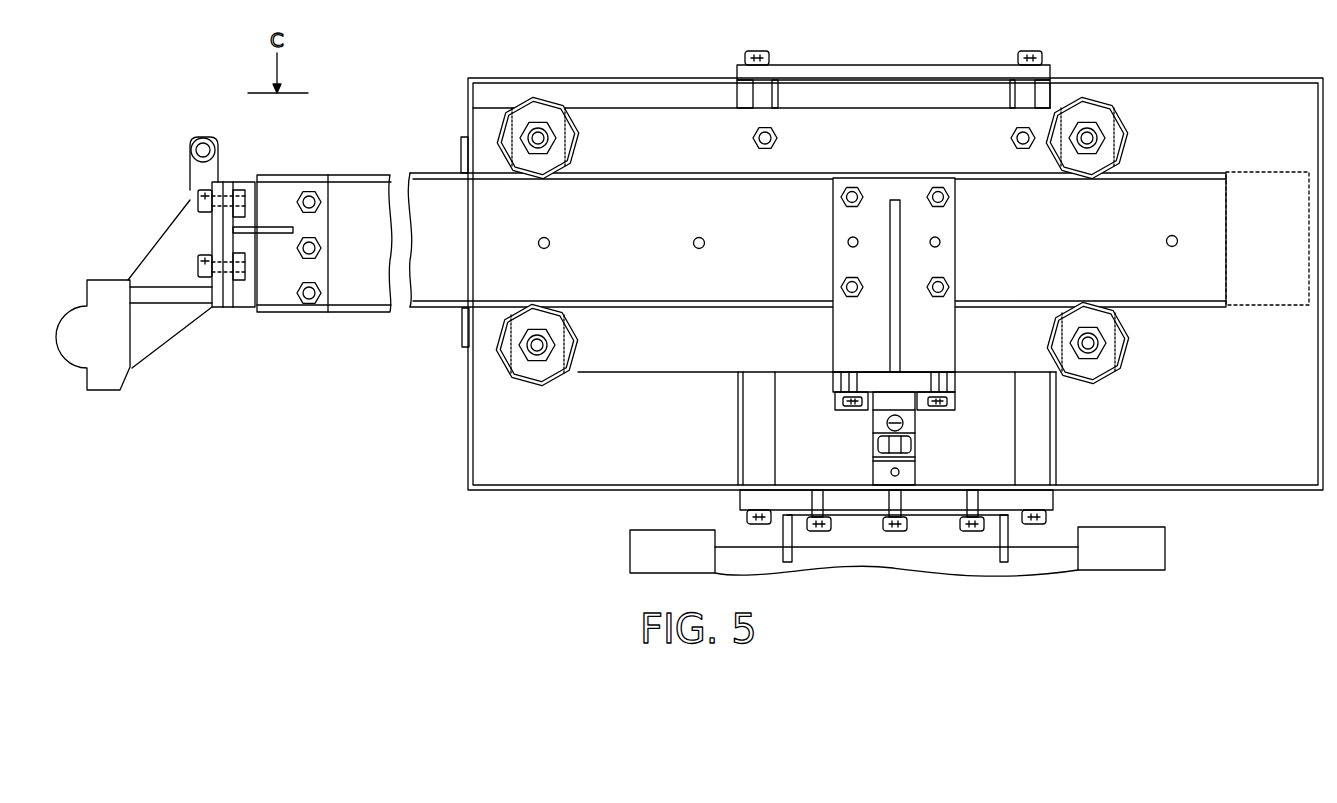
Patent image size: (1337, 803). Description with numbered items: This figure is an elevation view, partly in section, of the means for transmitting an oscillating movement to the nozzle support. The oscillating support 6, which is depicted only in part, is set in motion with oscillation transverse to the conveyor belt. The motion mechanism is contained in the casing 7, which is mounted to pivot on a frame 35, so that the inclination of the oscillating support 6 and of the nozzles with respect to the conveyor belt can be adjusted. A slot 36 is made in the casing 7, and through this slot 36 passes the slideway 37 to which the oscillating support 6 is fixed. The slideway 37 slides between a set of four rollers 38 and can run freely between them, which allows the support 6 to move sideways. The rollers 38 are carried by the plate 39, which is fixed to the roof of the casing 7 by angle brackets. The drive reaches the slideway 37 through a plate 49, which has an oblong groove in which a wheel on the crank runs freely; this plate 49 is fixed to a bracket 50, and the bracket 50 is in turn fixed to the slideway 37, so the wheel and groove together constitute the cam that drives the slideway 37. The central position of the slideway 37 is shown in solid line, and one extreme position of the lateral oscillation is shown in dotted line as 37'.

The oscillating support 6 is at (223, 313).
The casing 7 is at (1197, 78).
The frame 35 is at (630, 543).
The slot 36 is at (462, 315).
The slideway 37 is at (295, 264).
The extreme position of slideway 37' is at (1267, 214).
The rollers 38 is at (537, 98).
The plate 39 is at (807, 127).
The plate 49 is at (868, 400).
The bracket 50 is at (920, 217).